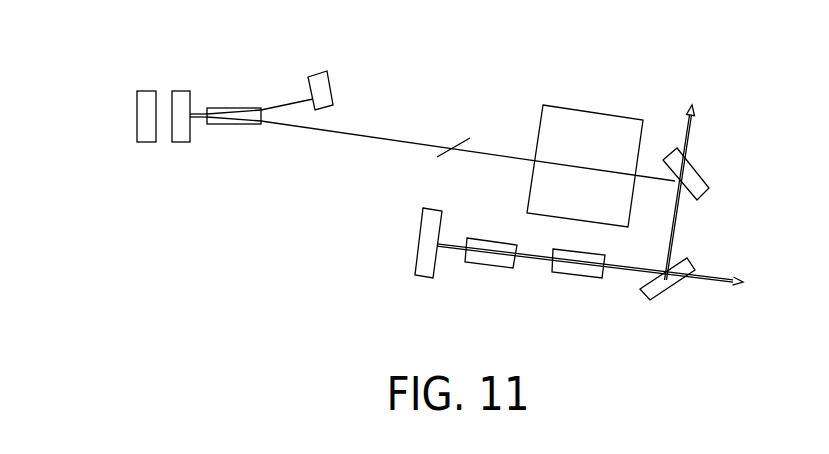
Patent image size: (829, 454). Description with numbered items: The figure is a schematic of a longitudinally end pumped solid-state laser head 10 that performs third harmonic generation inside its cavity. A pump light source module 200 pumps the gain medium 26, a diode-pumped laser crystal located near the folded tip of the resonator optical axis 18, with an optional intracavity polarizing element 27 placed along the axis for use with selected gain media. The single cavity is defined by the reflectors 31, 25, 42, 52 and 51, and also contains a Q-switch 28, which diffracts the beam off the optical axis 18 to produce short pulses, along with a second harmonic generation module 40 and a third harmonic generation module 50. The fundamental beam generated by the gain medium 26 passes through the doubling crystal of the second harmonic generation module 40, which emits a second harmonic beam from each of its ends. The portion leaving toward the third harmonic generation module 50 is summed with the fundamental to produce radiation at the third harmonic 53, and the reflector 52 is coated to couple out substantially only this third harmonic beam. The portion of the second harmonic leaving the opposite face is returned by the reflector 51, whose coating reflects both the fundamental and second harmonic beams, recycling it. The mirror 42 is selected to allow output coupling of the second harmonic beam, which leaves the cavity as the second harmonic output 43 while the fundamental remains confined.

The laser head 10 is at (514, 32).
The pump light source module 200 is at (112, 137).
The first reflector 25 is at (152, 156).
The gain medium 26 is at (265, 152).
The second reflector 31 is at (345, 67).
The resonator optical axis 18 is at (468, 154).
The intracavity polarizing element 27 is at (427, 115).
The Q-switch 28 is at (573, 140).
The mirror 42 is at (655, 132).
The second harmonic output 43 is at (647, 154).
The reflector 51 is at (342, 249).
The second harmonic generation module 40 is at (433, 280).
The third harmonic generation module 50 is at (543, 291).
The reflector 52 is at (633, 307).
The third harmonic 53 is at (590, 308).